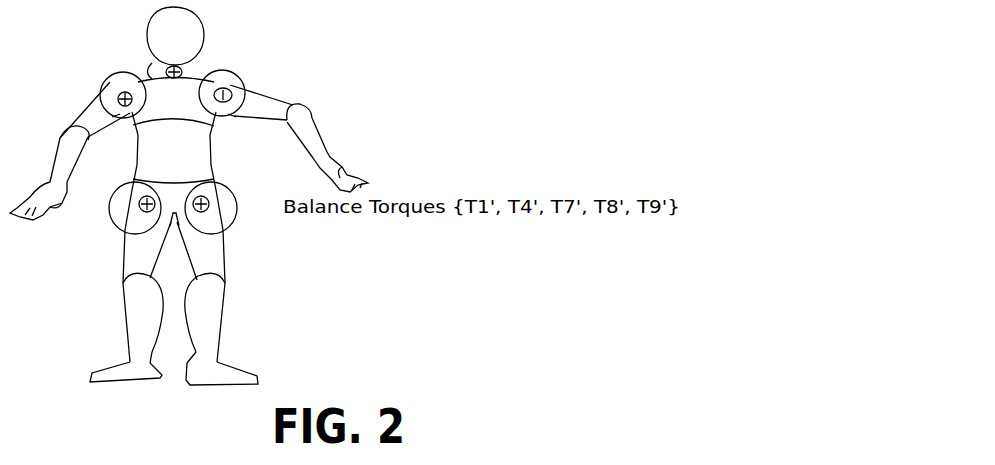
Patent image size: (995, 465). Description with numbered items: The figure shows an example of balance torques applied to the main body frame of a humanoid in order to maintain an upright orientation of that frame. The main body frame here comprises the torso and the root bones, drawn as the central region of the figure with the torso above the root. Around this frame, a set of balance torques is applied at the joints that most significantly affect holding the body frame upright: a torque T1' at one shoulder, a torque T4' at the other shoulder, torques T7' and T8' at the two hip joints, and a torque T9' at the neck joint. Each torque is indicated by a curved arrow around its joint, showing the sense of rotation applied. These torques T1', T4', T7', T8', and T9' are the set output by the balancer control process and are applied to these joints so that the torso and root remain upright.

The balance torque T1' is at (222, 89).
The balance torque T4' is at (122, 91).
The balance torque T7' is at (125, 206).
The balance torque T8' is at (221, 206).
The balance torque T9' is at (183, 55).
The element torso is at (174, 197).
The element root is at (173, 187).